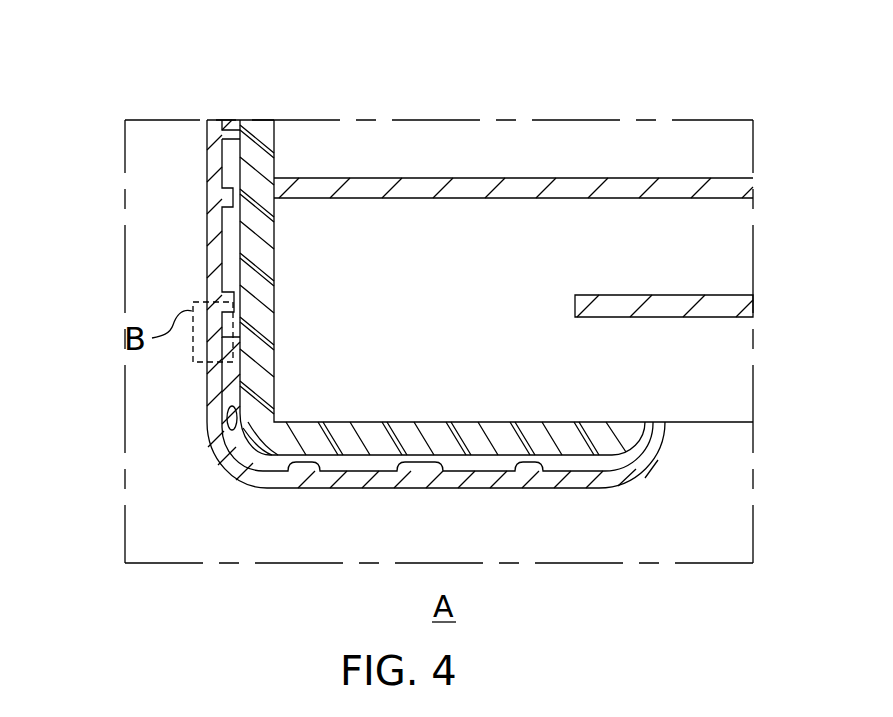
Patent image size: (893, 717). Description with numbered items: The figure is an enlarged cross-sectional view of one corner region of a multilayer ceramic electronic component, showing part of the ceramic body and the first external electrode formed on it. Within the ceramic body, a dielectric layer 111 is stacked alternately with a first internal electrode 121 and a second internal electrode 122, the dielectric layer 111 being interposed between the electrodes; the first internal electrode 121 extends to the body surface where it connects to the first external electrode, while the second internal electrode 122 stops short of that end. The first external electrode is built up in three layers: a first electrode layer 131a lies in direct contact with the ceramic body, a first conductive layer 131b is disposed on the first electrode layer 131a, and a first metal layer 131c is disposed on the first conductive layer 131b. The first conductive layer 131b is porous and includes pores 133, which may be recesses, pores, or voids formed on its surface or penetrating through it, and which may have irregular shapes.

The dielectric layer 111 is at (686, 249).
The first internal electrode 121 is at (488, 188).
The second internal electrode 122 is at (608, 303).
The first electrode layer 131a is at (228, 190).
The first conductive layer 131b is at (232, 228).
The first metal layer 131c is at (222, 270).
The pores 133 is at (228, 342).